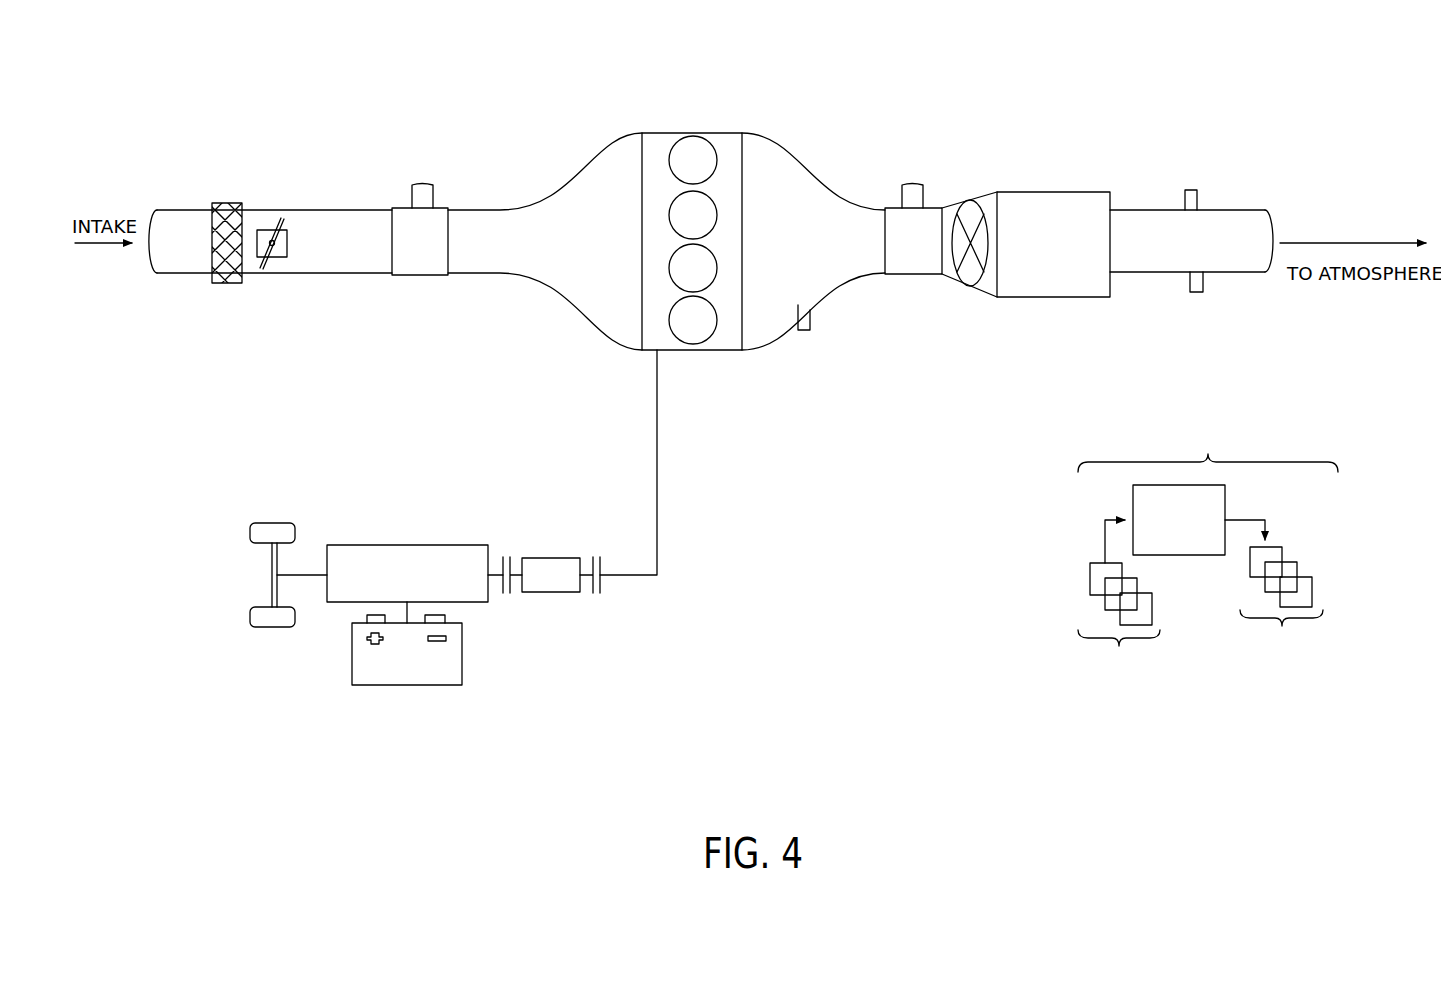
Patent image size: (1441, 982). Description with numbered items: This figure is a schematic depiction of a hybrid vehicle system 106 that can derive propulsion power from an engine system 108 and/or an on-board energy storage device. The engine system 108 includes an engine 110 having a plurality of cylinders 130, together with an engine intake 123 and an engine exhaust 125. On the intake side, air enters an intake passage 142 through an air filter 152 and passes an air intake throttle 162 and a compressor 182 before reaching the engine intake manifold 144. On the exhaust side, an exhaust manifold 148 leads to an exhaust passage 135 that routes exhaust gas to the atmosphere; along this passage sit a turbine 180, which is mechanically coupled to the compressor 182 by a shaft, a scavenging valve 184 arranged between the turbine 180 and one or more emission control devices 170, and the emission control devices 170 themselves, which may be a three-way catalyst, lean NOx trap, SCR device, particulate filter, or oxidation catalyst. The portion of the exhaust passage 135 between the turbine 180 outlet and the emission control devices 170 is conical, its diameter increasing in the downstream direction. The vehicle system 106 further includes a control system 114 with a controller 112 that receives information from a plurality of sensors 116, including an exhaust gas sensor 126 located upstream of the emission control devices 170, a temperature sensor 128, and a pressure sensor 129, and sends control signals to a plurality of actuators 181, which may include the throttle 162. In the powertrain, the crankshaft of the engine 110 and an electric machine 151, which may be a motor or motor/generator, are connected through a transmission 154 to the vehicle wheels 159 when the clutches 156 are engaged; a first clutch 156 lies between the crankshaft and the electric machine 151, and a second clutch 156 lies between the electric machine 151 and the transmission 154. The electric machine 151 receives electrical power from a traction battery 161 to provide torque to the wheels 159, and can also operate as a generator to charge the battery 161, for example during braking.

The hybrid vehicle system 106 is at (170, 105).
The engine system 108 is at (1305, 100).
The engine 110 is at (742, 222).
The controller 112 is at (1185, 524).
The control system 114 is at (1208, 441).
The sensors 116 is at (1119, 625).
The engine intake 123 is at (560, 157).
The engine exhaust 125 is at (862, 166).
The exhaust gas sensor 126 is at (810, 310).
The temperature sensor 128 is at (1199, 293).
The pressure sensor 129 is at (1191, 189).
The cylinders 130 is at (716, 152).
The exhaust passage 135 is at (1244, 209).
The intake passage 142 is at (188, 274).
The engine intake manifold 144 is at (613, 251).
The exhaust manifold 148 is at (835, 251).
The electric machine 151 is at (552, 594).
The air filter 152 is at (228, 203).
The transmission 154 is at (353, 603).
The clutches 156 is at (509, 566).
The vehicle wheels 159 is at (272, 628).
The traction battery 161 is at (412, 686).
The air intake throttle 162 is at (284, 256).
The emission control devices 170 is at (1042, 192).
The turbine 180 is at (928, 250).
The actuators 181 is at (433, 186).
The compressor 182 is at (435, 251).
The scavenging valve 184 is at (961, 280).